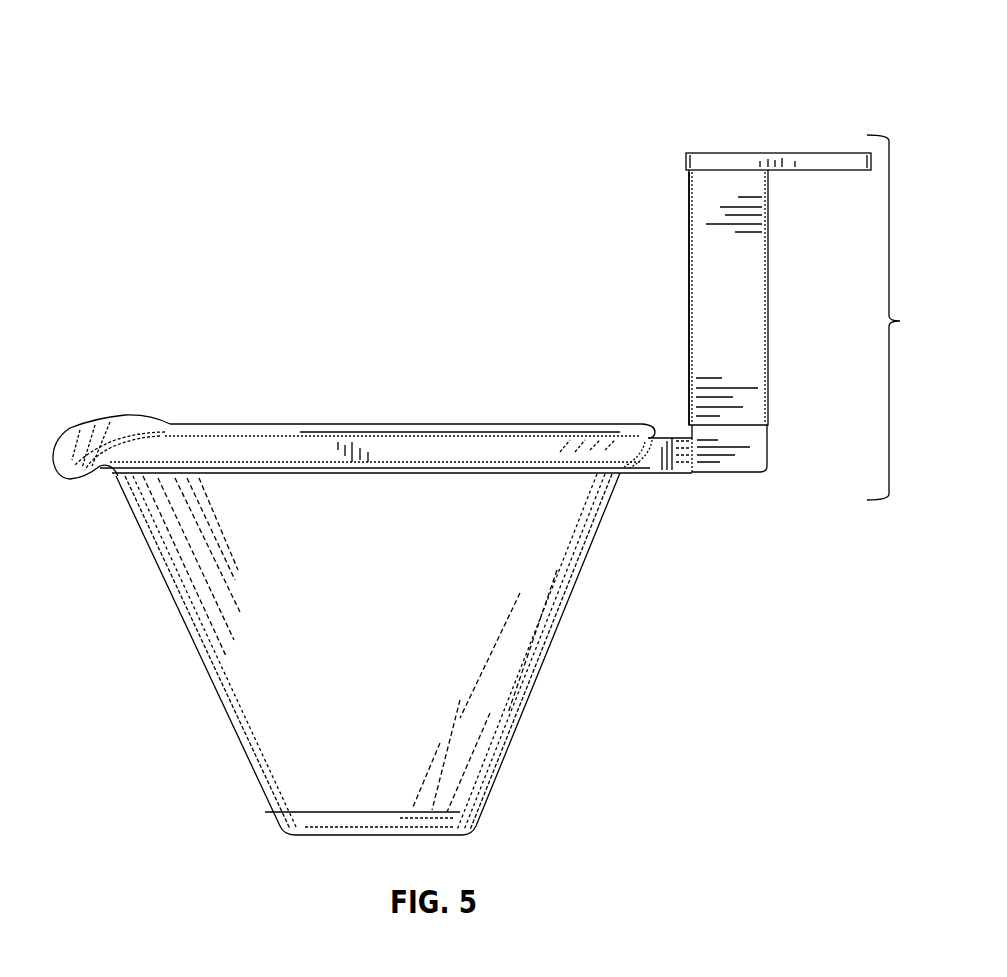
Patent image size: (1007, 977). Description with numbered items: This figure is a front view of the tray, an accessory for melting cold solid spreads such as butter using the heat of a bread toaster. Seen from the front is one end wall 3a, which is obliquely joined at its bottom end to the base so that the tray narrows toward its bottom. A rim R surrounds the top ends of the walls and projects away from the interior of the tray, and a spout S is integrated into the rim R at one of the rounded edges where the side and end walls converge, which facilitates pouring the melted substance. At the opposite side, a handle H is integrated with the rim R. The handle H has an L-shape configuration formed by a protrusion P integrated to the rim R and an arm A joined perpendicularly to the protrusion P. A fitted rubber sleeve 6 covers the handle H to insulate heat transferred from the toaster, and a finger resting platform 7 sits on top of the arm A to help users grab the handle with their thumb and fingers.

The end wall 3a is at (368, 654).
The rim R is at (300, 452).
The spout S is at (70, 448).
The protrusion P is at (649, 470).
The fitted rubber sleeve 6 is at (718, 353).
The arm A is at (688, 247).
The finger resting platform 7 is at (777, 157).
The handle H is at (909, 317).